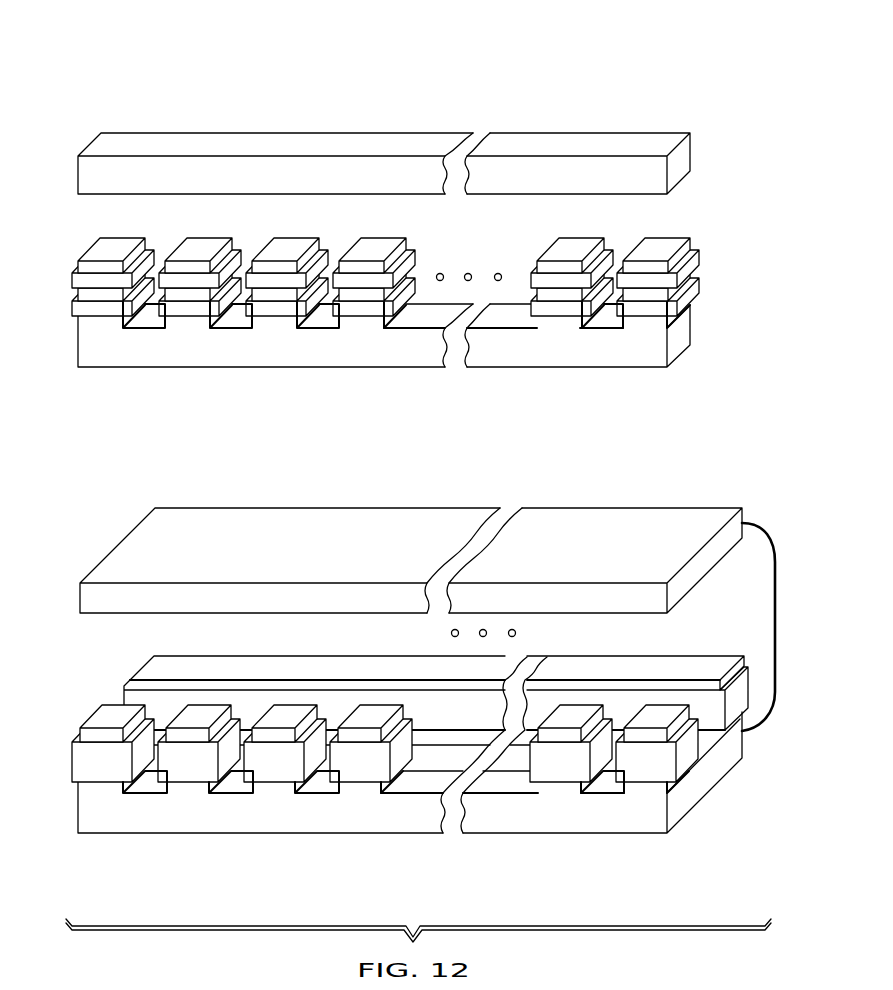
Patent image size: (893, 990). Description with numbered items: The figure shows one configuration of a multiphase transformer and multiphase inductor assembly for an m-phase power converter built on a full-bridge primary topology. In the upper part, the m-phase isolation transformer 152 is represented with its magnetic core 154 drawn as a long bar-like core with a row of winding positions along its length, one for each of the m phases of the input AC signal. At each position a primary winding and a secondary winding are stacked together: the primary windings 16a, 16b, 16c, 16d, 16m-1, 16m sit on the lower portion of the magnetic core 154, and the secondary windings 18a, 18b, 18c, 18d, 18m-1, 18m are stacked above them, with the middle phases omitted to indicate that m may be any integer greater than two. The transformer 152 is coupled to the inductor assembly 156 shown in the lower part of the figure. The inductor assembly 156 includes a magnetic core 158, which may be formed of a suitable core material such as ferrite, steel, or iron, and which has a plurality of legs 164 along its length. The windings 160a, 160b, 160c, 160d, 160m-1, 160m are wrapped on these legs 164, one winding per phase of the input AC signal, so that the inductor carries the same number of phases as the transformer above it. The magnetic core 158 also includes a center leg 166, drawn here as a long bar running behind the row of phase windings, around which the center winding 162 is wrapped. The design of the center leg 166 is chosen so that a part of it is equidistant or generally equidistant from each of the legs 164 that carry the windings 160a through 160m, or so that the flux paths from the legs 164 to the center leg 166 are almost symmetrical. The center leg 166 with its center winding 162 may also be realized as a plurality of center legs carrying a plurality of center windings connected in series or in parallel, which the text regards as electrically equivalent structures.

The m-phase isolation transformer 152 is at (127, 114).
The magnetic core 154 is at (402, 131).
The secondary winding 18a is at (102, 281).
The secondary winding 18b is at (189, 281).
The secondary winding 18c is at (276, 281).
The secondary winding 18d is at (363, 281).
The secondary winding 18m-1 is at (561, 281).
The secondary winding 18m is at (647, 281).
The primary winding 16a is at (112, 307).
The primary winding 16b is at (199, 307).
The primary winding 16c is at (286, 307).
The primary winding 16d is at (373, 307).
The primary winding 16m-1 is at (571, 307).
The primary winding 16m is at (657, 307).
The inductor assembly 156 is at (127, 504).
The magnetic core 158 is at (764, 535).
The winding 160a is at (110, 757).
The winding 160b is at (188, 757).
The winding 160c is at (273, 757).
The winding 160d is at (360, 757).
The winding 160m-1 is at (558, 757).
The winding 160m is at (645, 757).
The center winding 162 is at (750, 688).
The legs 164 is at (113, 790).
The center leg 166 is at (152, 668).